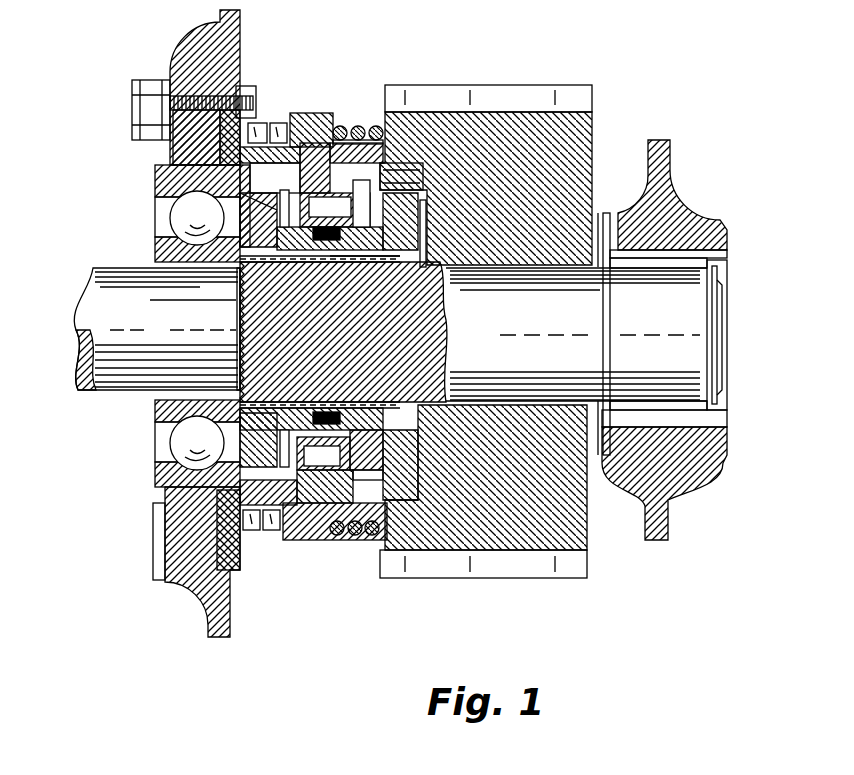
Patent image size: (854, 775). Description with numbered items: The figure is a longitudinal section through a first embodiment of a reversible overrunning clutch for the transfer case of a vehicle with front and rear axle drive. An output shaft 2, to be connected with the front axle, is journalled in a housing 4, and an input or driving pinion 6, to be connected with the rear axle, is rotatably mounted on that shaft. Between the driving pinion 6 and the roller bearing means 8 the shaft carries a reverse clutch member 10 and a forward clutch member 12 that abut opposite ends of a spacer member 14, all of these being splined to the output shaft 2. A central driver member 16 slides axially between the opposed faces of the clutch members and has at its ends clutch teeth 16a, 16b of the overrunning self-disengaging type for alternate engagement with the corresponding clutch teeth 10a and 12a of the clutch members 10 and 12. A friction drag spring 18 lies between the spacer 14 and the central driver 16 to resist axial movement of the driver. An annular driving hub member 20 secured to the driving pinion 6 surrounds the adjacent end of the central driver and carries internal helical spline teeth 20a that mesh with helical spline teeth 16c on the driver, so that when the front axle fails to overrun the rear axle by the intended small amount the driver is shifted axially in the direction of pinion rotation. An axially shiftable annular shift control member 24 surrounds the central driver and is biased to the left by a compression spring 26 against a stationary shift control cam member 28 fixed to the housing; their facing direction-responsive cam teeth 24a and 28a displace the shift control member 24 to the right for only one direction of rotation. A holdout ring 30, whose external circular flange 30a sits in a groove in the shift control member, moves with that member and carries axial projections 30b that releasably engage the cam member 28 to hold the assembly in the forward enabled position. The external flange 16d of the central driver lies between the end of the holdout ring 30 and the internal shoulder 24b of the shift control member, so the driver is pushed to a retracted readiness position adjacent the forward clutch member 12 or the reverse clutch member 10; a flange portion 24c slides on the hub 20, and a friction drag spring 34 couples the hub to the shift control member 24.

The output shaft 2 is at (690, 333).
The housing 4 is at (665, 173).
The driving pinion 6 is at (573, 515).
The roller bearing means 8 is at (197, 268).
The reverse clutch member 10 is at (258, 262).
The clutch teeth 10a is at (223, 390).
The forward clutch member 12 is at (388, 207).
The clutch teeth 12a is at (422, 258).
The spacer member 14 is at (300, 413).
The central driver member 16 is at (304, 262).
The clutch teeth 16a is at (331, 441).
The clutch teeth 16b is at (372, 415).
The helical spline teeth 16c is at (312, 537).
The external flange 16d is at (300, 478).
The friction drag spring 18 is at (340, 262).
The annular driving hub member 20 is at (413, 487).
The helical spline teeth 20a is at (362, 180).
The shift control member 24 is at (310, 540).
The cam teeth 24a is at (273, 530).
The internal shoulder 24b is at (325, 191).
The flange portion 24c is at (397, 152).
The compression spring 26 is at (372, 535).
The shift control cam member 28 is at (240, 567).
The cam teeth 28a is at (218, 532).
The holdout ring 30 is at (253, 164).
The external circular flange 30a is at (298, 113).
The axial projections 30b is at (209, 122).
The friction drag spring 34 is at (360, 127).